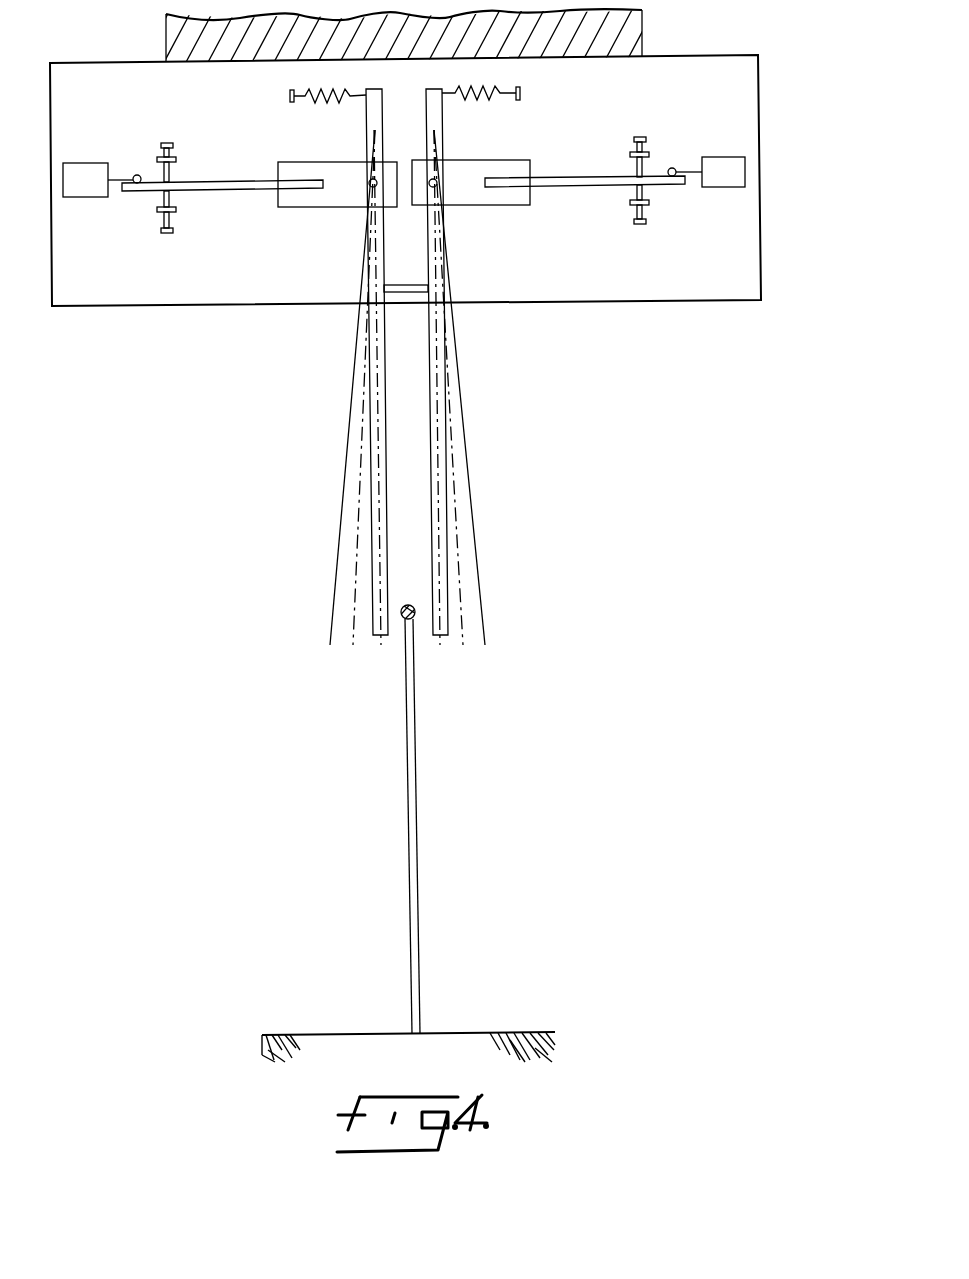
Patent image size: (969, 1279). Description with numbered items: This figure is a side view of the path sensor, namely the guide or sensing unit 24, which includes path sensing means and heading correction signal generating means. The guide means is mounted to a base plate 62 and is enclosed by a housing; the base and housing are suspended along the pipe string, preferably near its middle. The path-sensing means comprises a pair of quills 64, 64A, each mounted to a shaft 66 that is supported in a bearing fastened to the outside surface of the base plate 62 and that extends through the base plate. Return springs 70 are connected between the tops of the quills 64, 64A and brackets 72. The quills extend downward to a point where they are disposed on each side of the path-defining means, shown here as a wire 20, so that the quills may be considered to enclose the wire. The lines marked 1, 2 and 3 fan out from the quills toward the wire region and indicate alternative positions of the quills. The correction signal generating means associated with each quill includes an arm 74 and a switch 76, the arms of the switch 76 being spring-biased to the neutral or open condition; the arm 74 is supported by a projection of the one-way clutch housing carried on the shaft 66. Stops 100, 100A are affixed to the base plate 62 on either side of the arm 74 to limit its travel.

The first arm position line 1 is at (439, 407).
The second arm position line 2 is at (452, 407).
The third arm position line 3 is at (464, 404).
The wire 20 is at (418, 582).
The guide or sensing unit 24 is at (250, 334).
The base plate 62 is at (583, 293).
The quill 64 is at (428, 345).
The quill 64A is at (385, 487).
The shaft 66 is at (438, 185).
The return spring 70 is at (480, 97).
The bracket 72 is at (519, 91).
The arm 74 is at (585, 159).
The switch 76 is at (718, 187).
The stop 100 is at (645, 137).
The stop 100A is at (639, 224).